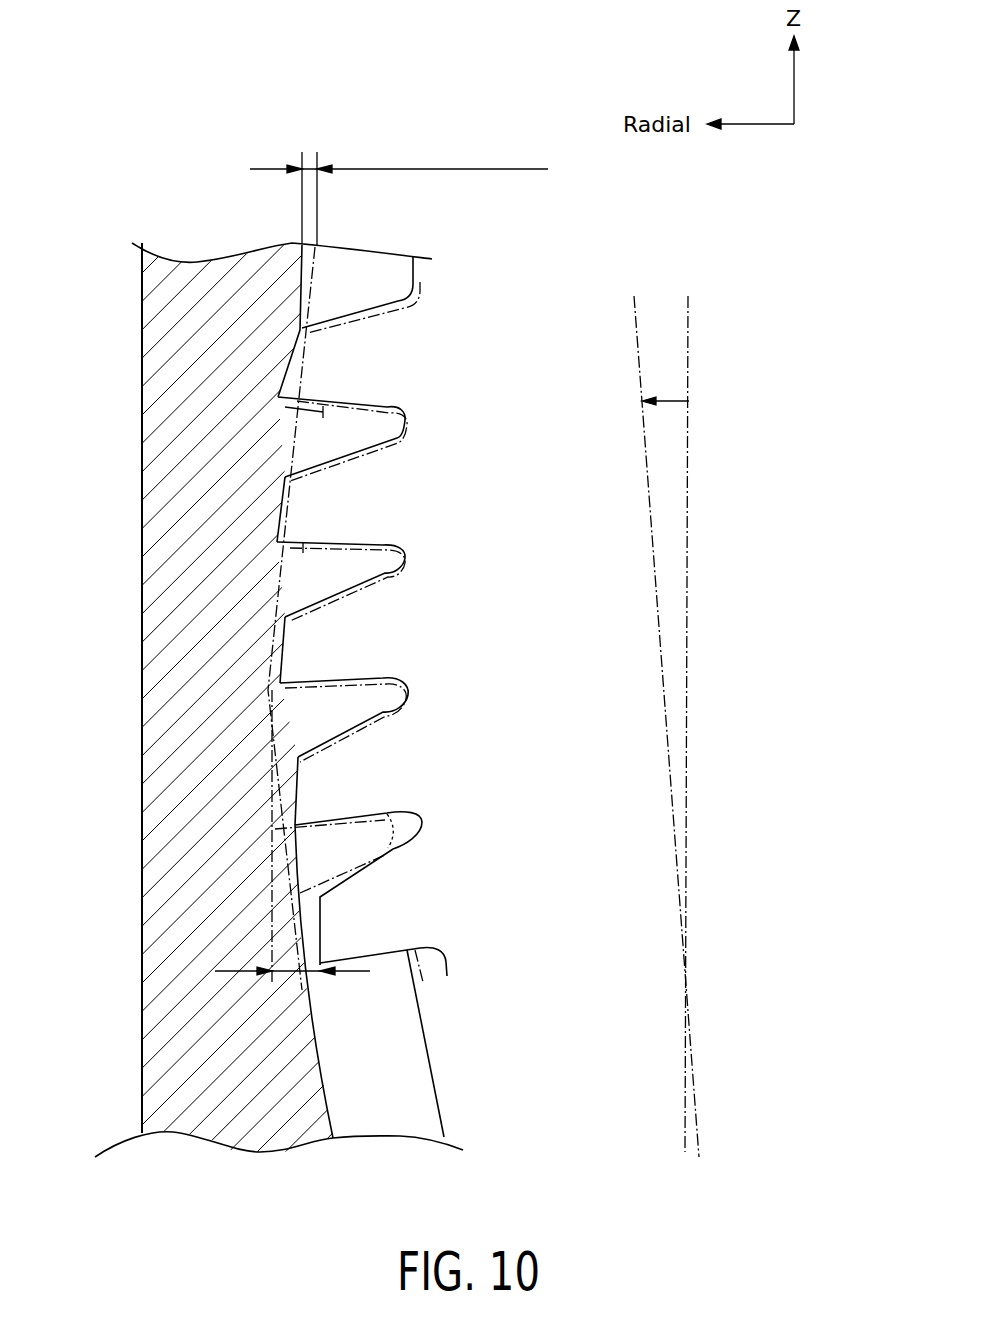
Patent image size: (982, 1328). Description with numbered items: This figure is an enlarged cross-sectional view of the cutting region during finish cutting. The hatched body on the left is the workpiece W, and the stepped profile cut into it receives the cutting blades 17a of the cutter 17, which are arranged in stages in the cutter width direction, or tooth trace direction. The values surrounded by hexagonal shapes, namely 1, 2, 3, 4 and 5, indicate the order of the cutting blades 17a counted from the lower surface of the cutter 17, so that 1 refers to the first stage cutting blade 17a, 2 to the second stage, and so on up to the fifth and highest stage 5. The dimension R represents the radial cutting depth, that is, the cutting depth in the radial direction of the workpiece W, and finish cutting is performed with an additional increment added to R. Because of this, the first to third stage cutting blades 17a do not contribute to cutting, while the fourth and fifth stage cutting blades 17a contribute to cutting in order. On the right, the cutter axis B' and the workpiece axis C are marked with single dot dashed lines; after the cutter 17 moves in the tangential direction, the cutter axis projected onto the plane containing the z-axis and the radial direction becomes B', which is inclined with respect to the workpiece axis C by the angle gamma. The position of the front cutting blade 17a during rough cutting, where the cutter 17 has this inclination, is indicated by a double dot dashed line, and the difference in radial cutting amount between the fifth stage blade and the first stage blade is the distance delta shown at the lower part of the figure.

The workpiece W is at (163, 668).
The first stage cutting blade 1 is at (354, 888).
The second stage cutting blade 2 is at (356, 731).
The third stage cutting blade 3 is at (354, 595).
The fourth stage cutting blade 4 is at (355, 455).
The fifth stage cutting blade 5 is at (367, 317).
The cutter 17 is at (452, 1088).
The cutting blade 17a is at (337, 920).
The radial cutting depth R is at (397, 190).
The cutter axis B' is at (660, 712).
The workpiece axis C is at (690, 709).